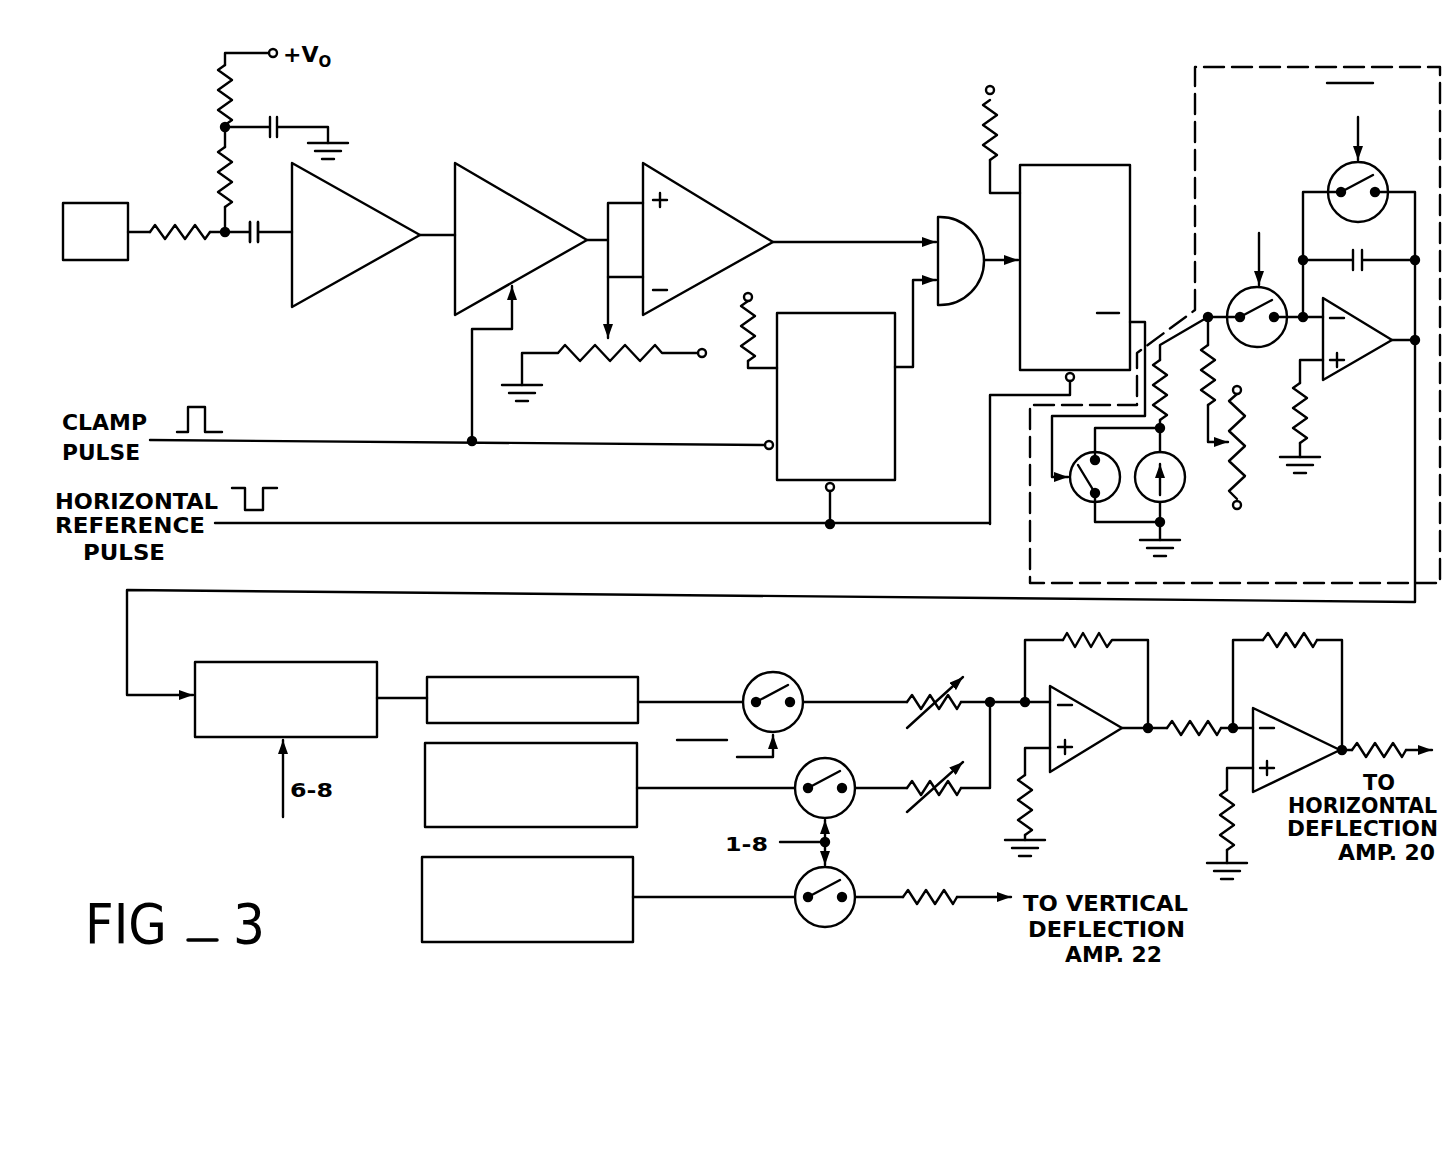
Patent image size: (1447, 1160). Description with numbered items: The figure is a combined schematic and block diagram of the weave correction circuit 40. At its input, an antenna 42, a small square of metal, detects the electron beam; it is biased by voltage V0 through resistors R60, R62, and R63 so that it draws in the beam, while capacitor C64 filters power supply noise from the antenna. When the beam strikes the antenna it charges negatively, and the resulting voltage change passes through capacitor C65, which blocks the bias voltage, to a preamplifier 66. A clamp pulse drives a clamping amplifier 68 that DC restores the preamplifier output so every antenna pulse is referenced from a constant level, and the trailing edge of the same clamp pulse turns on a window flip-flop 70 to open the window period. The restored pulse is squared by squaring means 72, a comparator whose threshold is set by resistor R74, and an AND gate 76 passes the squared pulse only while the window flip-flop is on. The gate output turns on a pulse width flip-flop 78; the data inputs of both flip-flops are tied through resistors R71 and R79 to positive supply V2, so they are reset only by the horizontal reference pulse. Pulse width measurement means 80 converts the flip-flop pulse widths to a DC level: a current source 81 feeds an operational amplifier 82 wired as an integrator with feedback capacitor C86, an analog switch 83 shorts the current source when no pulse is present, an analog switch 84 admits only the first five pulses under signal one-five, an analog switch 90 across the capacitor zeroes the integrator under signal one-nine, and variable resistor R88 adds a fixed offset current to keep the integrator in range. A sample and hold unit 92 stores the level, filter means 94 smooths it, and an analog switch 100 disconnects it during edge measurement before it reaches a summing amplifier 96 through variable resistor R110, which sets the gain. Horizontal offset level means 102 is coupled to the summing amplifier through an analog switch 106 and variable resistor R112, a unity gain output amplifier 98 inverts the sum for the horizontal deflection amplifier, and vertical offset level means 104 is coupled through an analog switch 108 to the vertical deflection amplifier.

The antenna 42 is at (97, 201).
The weave correction circuit 40 is at (633, 128).
The preamplifier 66 is at (347, 190).
The clamping amplifier 68 is at (513, 192).
The squaring means 72 is at (690, 190).
The AND gate 76 is at (940, 220).
The pulse width flip-flop 78 is at (1070, 163).
The window flip-flop 70 is at (895, 433).
The pulse width measurement means 80 is at (1193, 93).
The analog switch 90 is at (1338, 167).
The analog switch 84 is at (1247, 288).
The operational amplifier 82 is at (1353, 365).
The analog switch 83 is at (1080, 498).
The current source 81 is at (1180, 490).
The sample and hold unit 92 is at (288, 657).
The filter means 94 is at (528, 675).
The analog switch 100 is at (772, 668).
The analog switch 106 is at (837, 755).
The analog switch 108 is at (858, 866).
The summing amplifier 96 is at (1092, 750).
The output amplifier 98 is at (1290, 725).
The horizontal offset level means 102 is at (425, 800).
The vertical offset level means 104 is at (422, 873).
The resistor R60 is at (197, 95).
The resistor R62 is at (197, 177).
The resistor R63 is at (180, 252).
The capacitor C64 is at (286, 119).
The capacitor C65 is at (270, 253).
The resistor R74 is at (609, 339).
The resistor R71 is at (742, 335).
The resistor R79 is at (971, 122).
The capacitor C86 is at (1359, 276).
The variable resistor R88 is at (1255, 420).
The variable resistor R110 is at (938, 685).
The variable resistor R112 is at (933, 779).